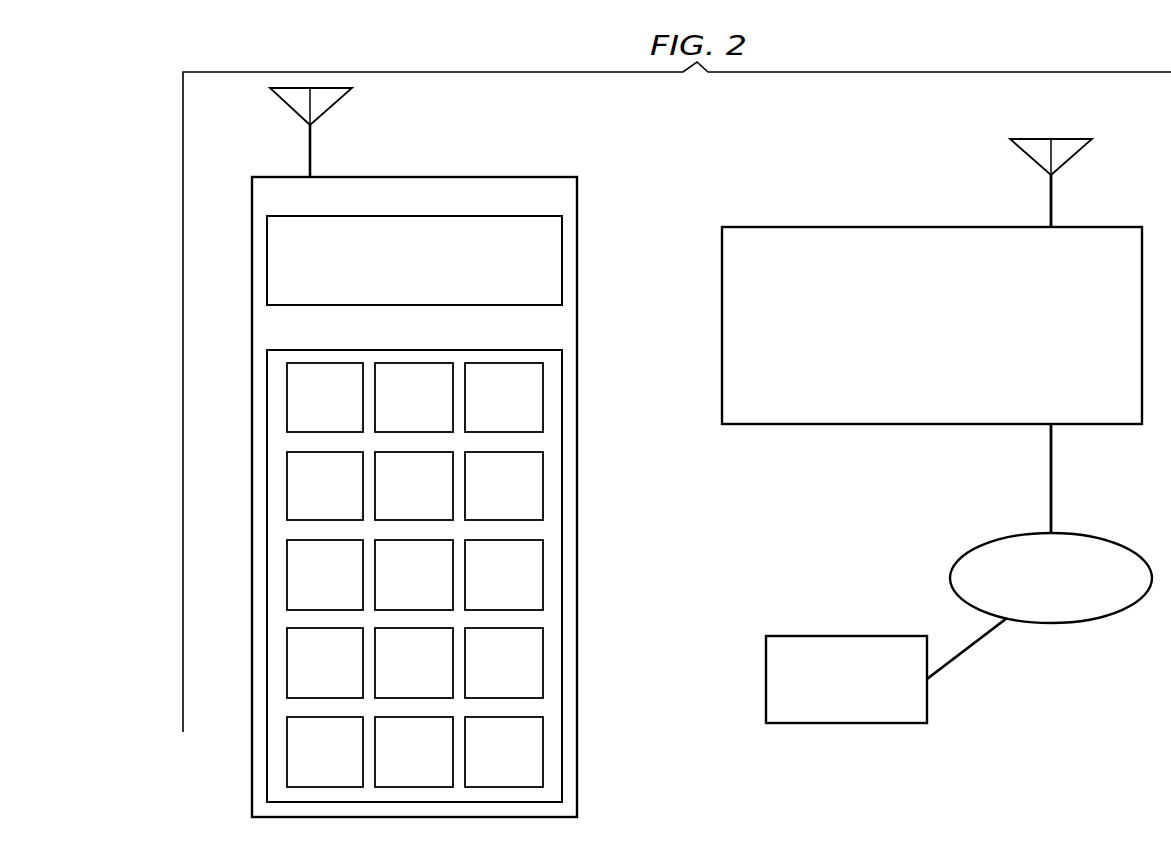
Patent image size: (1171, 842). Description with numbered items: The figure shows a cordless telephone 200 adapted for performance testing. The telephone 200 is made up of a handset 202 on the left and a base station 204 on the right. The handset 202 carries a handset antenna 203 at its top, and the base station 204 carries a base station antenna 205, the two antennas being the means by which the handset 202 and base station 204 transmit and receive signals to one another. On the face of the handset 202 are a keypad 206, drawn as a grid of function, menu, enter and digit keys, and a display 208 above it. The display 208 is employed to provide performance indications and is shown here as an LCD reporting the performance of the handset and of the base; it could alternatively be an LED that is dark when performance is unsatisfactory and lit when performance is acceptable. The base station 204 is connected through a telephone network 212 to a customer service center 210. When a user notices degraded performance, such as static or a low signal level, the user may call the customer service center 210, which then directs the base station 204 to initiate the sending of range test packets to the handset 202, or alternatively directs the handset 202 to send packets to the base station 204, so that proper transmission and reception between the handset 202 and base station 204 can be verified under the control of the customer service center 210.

The telephone 200 is at (645, 122).
The handset 202 is at (498, 176).
The handset antenna 203 is at (286, 103).
The base station 204 is at (816, 226).
The base station antenna 205 is at (1024, 151).
The keypad 206 is at (336, 349).
The display 208 is at (335, 216).
The customer service center 210 is at (798, 635).
The telephone network 212 is at (1118, 540).